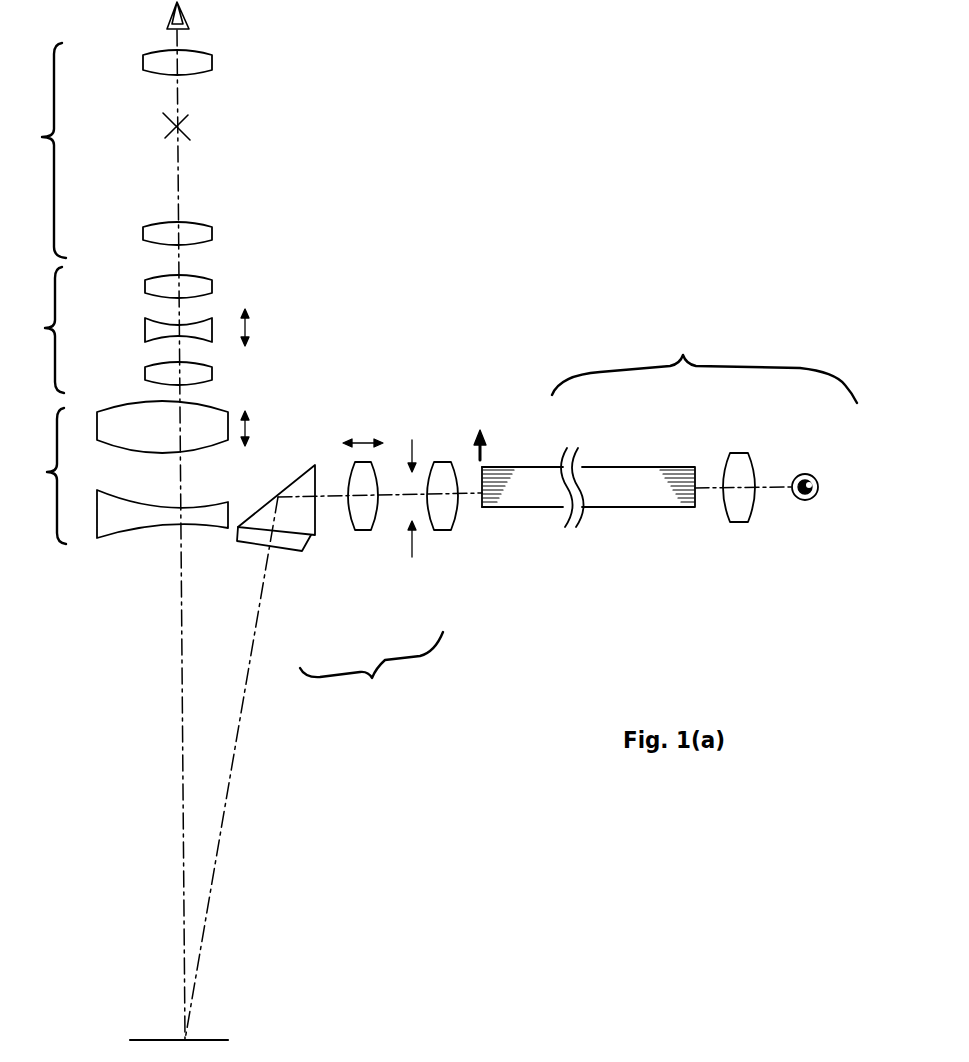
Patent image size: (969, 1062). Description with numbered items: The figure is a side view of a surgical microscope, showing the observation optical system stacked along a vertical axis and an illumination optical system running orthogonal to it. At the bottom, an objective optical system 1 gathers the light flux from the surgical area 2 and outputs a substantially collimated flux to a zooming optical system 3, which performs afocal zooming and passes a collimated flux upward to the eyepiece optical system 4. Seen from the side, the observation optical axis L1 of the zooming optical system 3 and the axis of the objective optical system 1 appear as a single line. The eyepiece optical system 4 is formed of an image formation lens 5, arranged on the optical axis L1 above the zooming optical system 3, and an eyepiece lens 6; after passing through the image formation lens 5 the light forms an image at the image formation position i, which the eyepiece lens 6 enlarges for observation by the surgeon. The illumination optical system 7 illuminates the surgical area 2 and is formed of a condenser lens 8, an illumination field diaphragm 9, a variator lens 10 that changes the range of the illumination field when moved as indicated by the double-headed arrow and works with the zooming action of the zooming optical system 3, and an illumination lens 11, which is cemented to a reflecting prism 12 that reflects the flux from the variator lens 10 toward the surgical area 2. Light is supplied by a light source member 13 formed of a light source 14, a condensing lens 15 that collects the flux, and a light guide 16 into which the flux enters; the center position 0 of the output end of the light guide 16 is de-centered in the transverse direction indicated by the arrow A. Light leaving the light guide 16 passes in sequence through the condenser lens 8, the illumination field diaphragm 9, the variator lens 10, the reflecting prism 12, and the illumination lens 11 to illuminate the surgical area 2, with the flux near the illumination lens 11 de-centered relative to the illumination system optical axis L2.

The objective optical system 1 is at (125, 472).
The surgical area 2 is at (191, 1040).
The zooming optical system 3 is at (125, 330).
The eyepiece optical system 4 is at (116, 150).
The image formation lens 5 is at (148, 230).
The eyepiece lens 6 is at (143, 60).
The image formation position i is at (182, 127).
The illumination optical system 7 is at (347, 576).
The condenser lens 8 is at (444, 532).
The illumination field diaphragm 9 is at (412, 562).
The variator lens 10 is at (360, 533).
The illumination lens 11 is at (288, 547).
The reflecting prism 12 is at (308, 527).
The light source member 13 is at (669, 426).
The light source 14 is at (800, 473).
The condensing lens 15 is at (733, 453).
The light guide 16 is at (528, 467).
The center position of the output end of the light guide 0 is at (481, 487).
The arrow A is at (478, 429).
The observation optical axis L1 is at (182, 772).
The illumination system optical axis L2 is at (233, 760).